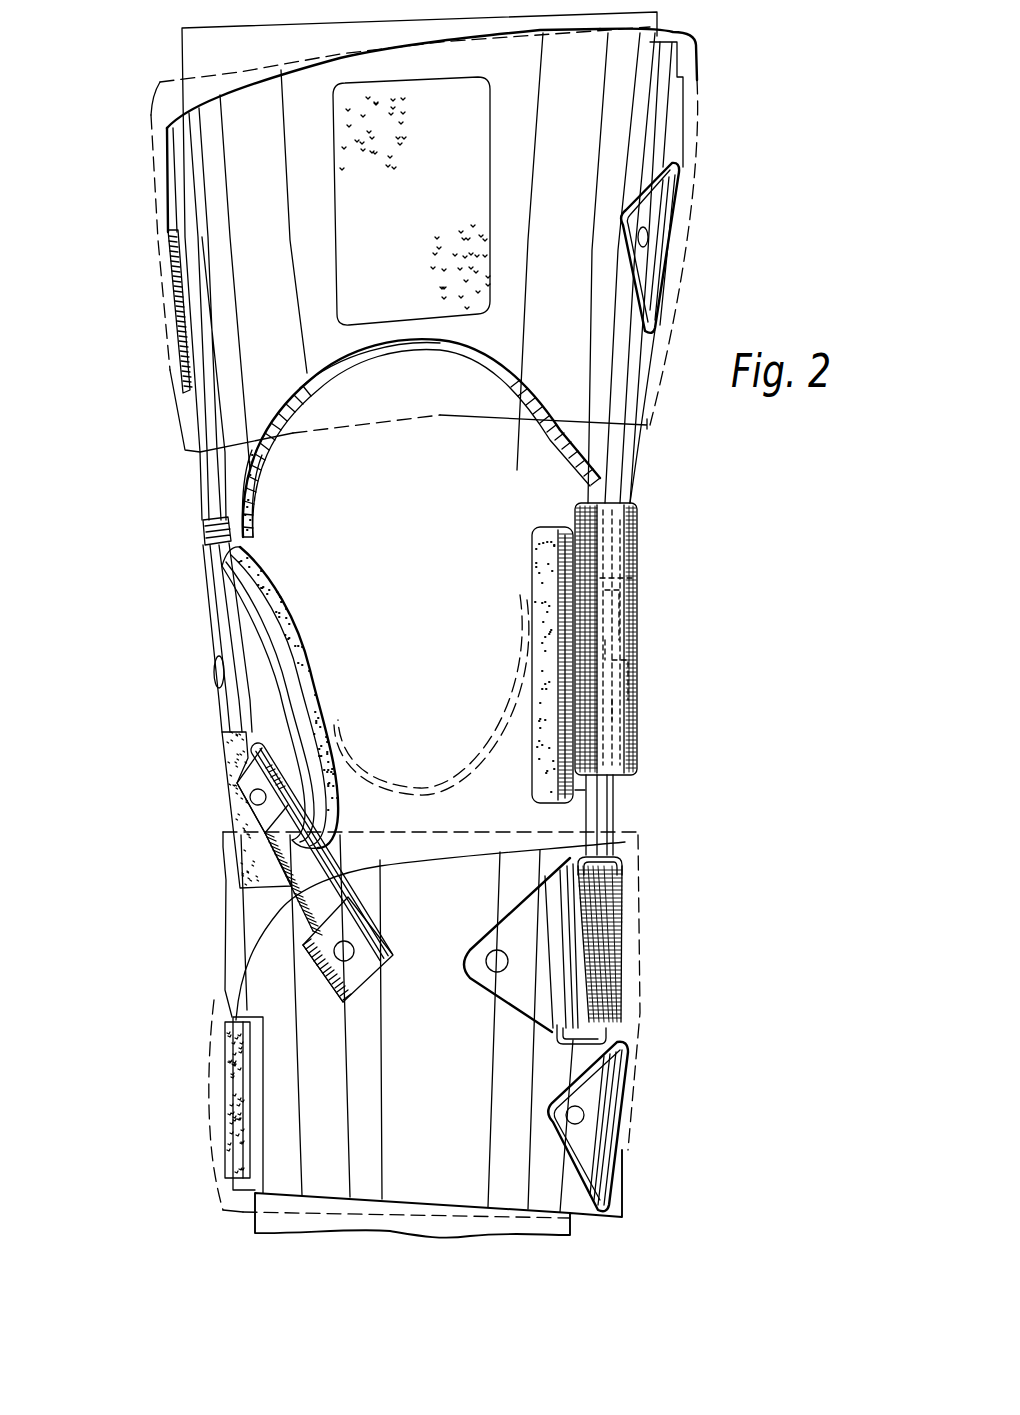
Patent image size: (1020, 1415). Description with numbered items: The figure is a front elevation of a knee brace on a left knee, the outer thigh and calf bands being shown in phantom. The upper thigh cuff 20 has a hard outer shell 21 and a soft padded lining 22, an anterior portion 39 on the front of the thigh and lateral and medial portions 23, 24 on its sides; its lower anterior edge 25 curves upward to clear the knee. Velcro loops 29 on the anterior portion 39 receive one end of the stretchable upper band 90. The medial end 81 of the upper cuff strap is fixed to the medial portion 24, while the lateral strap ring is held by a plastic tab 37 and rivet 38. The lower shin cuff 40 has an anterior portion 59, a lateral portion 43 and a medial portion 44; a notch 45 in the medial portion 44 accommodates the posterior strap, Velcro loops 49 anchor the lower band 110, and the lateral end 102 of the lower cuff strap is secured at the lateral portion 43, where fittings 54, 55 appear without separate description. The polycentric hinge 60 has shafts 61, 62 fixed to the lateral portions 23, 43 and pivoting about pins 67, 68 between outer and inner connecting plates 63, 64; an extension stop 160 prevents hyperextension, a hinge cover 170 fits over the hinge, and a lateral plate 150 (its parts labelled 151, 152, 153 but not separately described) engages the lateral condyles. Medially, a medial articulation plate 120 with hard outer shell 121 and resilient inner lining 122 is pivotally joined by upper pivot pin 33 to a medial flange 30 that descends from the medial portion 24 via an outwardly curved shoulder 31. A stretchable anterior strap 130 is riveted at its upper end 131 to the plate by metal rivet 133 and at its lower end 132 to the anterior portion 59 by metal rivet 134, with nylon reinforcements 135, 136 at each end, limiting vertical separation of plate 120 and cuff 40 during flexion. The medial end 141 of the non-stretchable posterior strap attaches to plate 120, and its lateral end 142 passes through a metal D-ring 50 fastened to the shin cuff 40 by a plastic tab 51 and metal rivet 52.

The upper thigh cuff 20 is at (206, 477).
The hard outer shell 21 is at (246, 505).
The soft padded lining 22 is at (258, 490).
The lateral portion 23 is at (612, 138).
The medial portion 24 is at (212, 175).
The lower anterior edge 25 is at (392, 343).
The Velcro loops 29 is at (333, 100).
The medial flange 30 is at (212, 600).
The outwardly curved shoulder 31 is at (203, 532).
The upper pivot pin 33 is at (214, 678).
The plastic tab 37 is at (655, 270).
The rivet 38 is at (652, 238).
The anterior portion 39 is at (453, 342).
The lower shin cuff 40 is at (256, 1012).
The lateral portion 43 is at (583, 1050).
The medial portion 44 is at (263, 1063).
The notch or cut-out 45 is at (258, 968).
The Velcro loops 49 is at (225, 1040).
The metal D-ring 50 is at (624, 849).
The plastic tab 51 is at (500, 920).
The metal rivet 52 is at (500, 966).
The buckle hatch 54 is at (592, 1160).
The hole 55 is at (585, 1118).
The anterior portion 59 is at (460, 870).
The polycentric hinge 60 is at (626, 708).
The upper shaft 61 is at (640, 380).
The lower shaft 62 is at (608, 815).
The outer connecting plate 63 is at (632, 574).
The inner connecting plate 64 is at (640, 579).
The upper pivot pin 67 is at (590, 611).
The lower pivot pin 68 is at (570, 641).
The medial end 81 is at (168, 243).
The upper band 90 is at (697, 87).
The lateral end 102 is at (625, 1100).
The lower band 110 is at (640, 975).
The medial articulation plate 120 is at (258, 628).
The hard outer shell 121 is at (268, 621).
The inner lining 122 is at (293, 626).
The stretchable anterior strap 130 is at (272, 880).
The upper end 131 is at (265, 751).
The lower end 132 is at (365, 930).
The metal rivet 133 is at (250, 797).
The metal rivet 134 is at (352, 958).
The fabric reinforcement 135 is at (232, 812).
The fabric reinforcement 136 is at (345, 1002).
The medial end 141 is at (222, 752).
The lateral end 142 is at (624, 940).
The lateral plate 150 is at (584, 786).
The pad 151 is at (540, 551).
The pad cover 152 is at (560, 534).
The pad edge 153 is at (570, 697).
The extension stop 160 is at (637, 638).
The hinge cover 170 is at (638, 664).